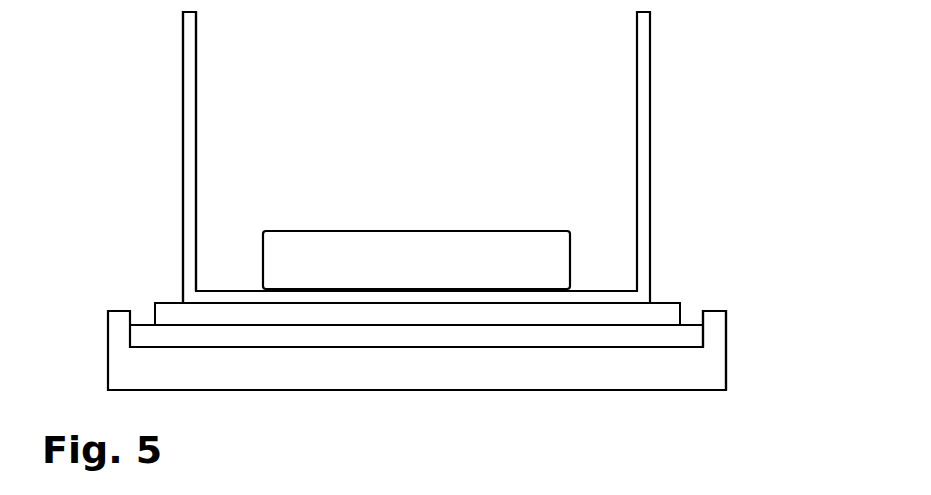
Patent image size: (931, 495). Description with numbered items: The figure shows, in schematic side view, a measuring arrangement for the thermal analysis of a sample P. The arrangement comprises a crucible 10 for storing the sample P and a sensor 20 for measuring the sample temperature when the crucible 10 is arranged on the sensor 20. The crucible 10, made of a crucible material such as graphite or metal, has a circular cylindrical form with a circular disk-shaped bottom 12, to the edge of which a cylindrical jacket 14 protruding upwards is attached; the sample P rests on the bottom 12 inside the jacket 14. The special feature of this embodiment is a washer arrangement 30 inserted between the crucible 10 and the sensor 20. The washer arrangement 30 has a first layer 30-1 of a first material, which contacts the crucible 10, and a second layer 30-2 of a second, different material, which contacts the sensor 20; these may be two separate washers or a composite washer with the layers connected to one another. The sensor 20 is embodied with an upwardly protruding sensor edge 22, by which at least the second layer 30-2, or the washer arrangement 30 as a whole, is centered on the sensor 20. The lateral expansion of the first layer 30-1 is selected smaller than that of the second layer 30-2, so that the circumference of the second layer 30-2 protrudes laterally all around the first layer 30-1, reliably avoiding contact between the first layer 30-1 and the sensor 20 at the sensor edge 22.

The crucible 10 is at (170, 90).
The bottom 12 is at (208, 297).
The cylindrical jacket 14 is at (190, 176).
The sensor 20 is at (100, 341).
The sensor edge 22 is at (713, 333).
The washer arrangement 30 is at (787, 217).
The first layer 30-1 is at (620, 313).
The second layer 30-2 is at (627, 337).
The sample P is at (415, 223).